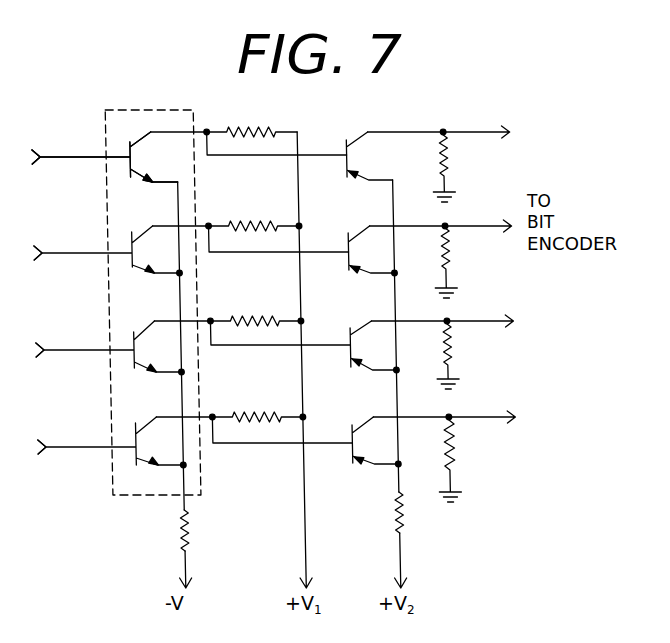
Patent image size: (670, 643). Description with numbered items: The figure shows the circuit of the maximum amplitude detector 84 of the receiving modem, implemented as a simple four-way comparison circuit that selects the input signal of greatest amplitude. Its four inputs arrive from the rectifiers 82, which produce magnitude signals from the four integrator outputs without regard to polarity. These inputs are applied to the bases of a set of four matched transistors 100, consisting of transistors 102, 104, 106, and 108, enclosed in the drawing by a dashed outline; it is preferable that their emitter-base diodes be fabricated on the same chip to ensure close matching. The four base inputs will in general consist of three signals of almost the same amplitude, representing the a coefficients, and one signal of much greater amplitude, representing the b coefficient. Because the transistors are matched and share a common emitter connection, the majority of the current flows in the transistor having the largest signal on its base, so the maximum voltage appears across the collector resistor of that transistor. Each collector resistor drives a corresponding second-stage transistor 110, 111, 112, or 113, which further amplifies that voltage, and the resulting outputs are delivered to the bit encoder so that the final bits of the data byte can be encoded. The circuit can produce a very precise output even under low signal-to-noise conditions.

The rectifiers 82 is at (57, 341).
The maximum amplitude detector 84 is at (128, 544).
The matched transistors 100 is at (105, 134).
The transistor 102 is at (128, 168).
The transistor 104 is at (128, 266).
The transistor 106 is at (132, 355).
The transistor 108 is at (132, 433).
The transistor 110 is at (362, 157).
The transistor 111 is at (346, 258).
The transistor 112 is at (347, 352).
The transistor 113 is at (347, 452).